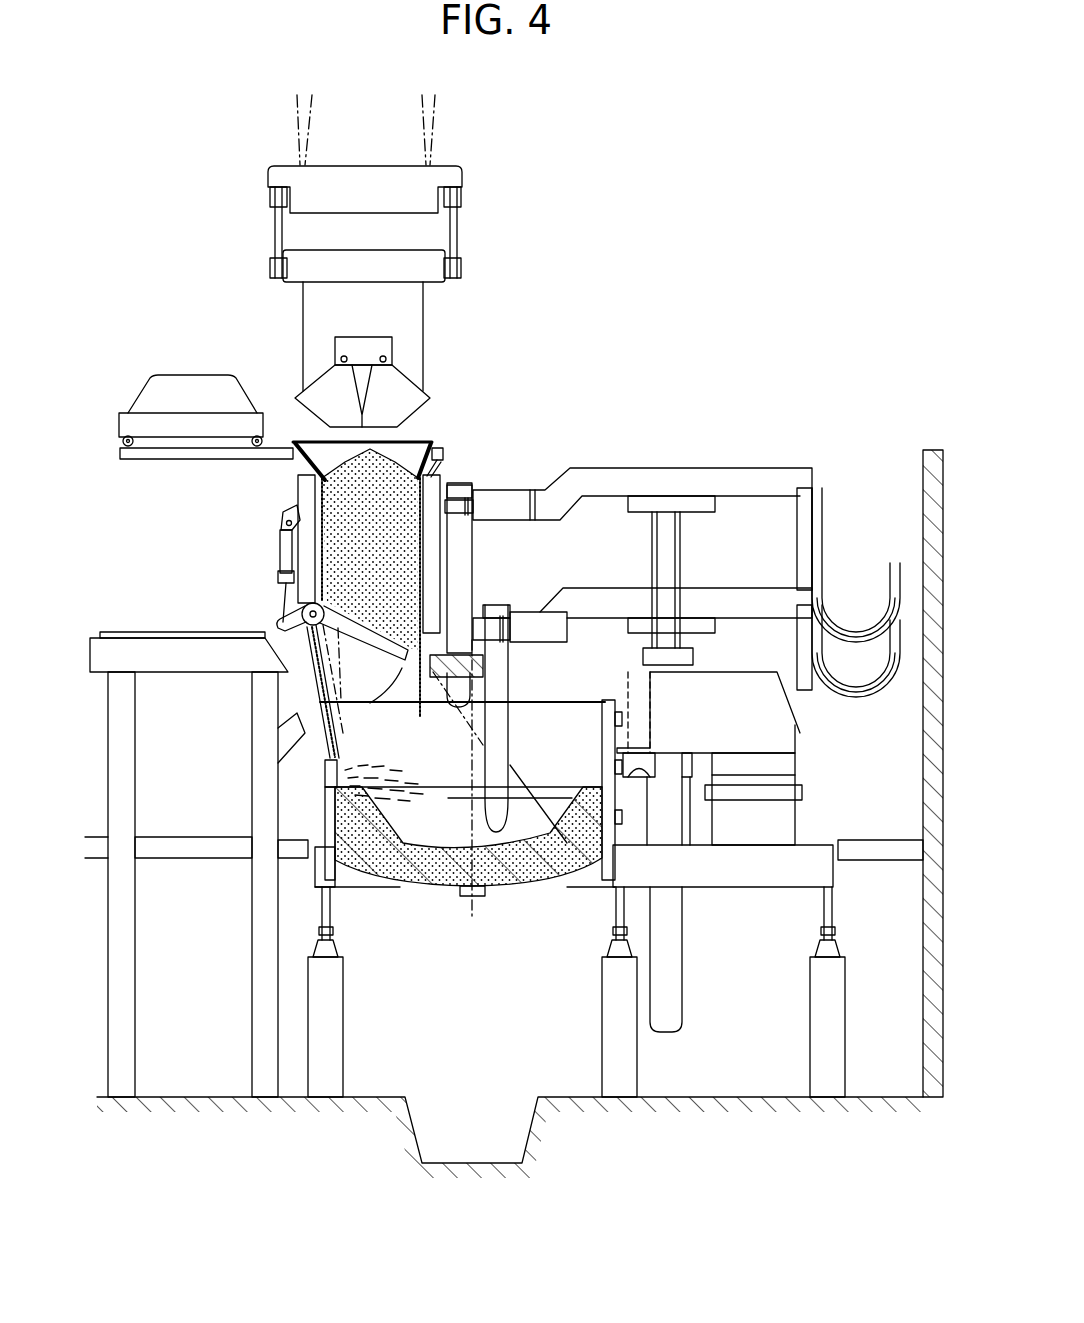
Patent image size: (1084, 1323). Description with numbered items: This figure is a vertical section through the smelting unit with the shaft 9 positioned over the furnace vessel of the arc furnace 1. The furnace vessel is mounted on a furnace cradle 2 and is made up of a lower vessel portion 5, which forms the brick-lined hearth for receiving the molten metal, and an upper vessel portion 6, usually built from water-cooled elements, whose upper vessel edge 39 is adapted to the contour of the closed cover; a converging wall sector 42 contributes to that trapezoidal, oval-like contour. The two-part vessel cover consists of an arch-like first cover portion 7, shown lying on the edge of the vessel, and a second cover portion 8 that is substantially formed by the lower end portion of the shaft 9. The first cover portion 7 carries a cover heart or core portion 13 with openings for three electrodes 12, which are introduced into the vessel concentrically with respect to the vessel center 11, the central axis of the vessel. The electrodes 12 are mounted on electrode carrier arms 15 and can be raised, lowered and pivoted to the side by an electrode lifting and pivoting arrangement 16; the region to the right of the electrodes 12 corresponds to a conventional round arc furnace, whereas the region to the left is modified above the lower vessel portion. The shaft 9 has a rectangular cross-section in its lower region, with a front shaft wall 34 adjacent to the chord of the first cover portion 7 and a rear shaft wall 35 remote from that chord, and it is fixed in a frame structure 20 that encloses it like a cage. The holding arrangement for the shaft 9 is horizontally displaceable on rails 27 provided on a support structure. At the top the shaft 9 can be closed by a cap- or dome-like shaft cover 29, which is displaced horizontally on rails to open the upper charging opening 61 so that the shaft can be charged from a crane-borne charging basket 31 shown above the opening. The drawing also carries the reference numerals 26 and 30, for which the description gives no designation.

The arc furnace 1 is at (536, 603).
The furnace cradle 2 is at (330, 915).
The lower vessel portion 5 is at (330, 812).
The upper vessel portion 6 is at (318, 757).
The first cover portion 7 is at (560, 690).
The second cover portion 8 is at (405, 680).
The shaft 9 is at (300, 665).
The vessel center 11 is at (477, 912).
The electrodes 12 is at (465, 488).
The cover heart or core portion 13 is at (518, 680).
The electrode carrier arms 15 is at (610, 480).
The electrode lifting and pivoting arrangement 16 is at (722, 665).
The frame structure 20 is at (307, 493).
The stand 26 is at (122, 751).
The rails 27 is at (148, 632).
The shaft cover 29 is at (178, 390).
The rail 30 is at (158, 456).
The charging basket 31 is at (408, 328).
The front shaft wall 34 is at (423, 557).
The rear shaft wall 35 is at (320, 555).
The upper vessel edge 39 is at (322, 720).
The converging wall sector 42 is at (335, 752).
The upper charging opening 61 is at (403, 452).